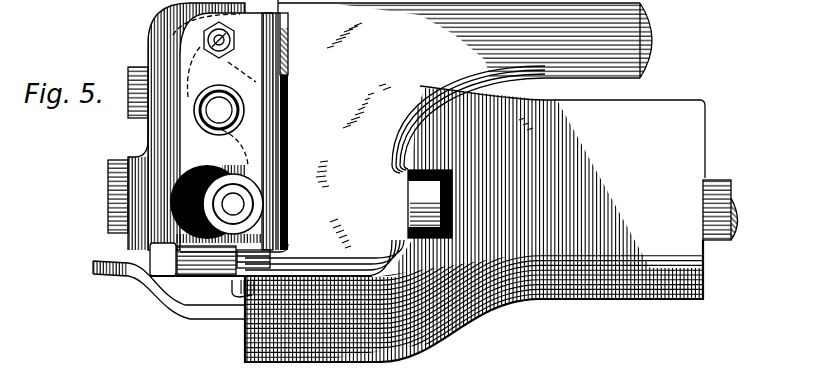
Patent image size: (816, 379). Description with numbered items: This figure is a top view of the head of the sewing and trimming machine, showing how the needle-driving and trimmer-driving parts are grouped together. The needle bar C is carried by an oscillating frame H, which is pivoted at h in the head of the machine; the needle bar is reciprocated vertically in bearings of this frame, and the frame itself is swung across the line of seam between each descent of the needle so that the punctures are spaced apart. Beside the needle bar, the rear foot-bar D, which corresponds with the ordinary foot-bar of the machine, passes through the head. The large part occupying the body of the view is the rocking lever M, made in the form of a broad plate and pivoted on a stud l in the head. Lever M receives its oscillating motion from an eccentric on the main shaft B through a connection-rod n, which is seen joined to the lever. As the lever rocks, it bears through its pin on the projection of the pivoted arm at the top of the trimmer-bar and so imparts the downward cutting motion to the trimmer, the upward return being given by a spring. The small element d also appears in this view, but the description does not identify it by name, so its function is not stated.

The rocking lever M is at (427, 183).
The stud l is at (471, 40).
The connection-rod n is at (430, 204).
The main shaft B is at (720, 180).
The pin d is at (240, 139).
The oscillating frame H is at (213, 290).
The pivot h is at (231, 36).
The rear foot-bar D is at (219, 110).
The needle bar C is at (216, 202).